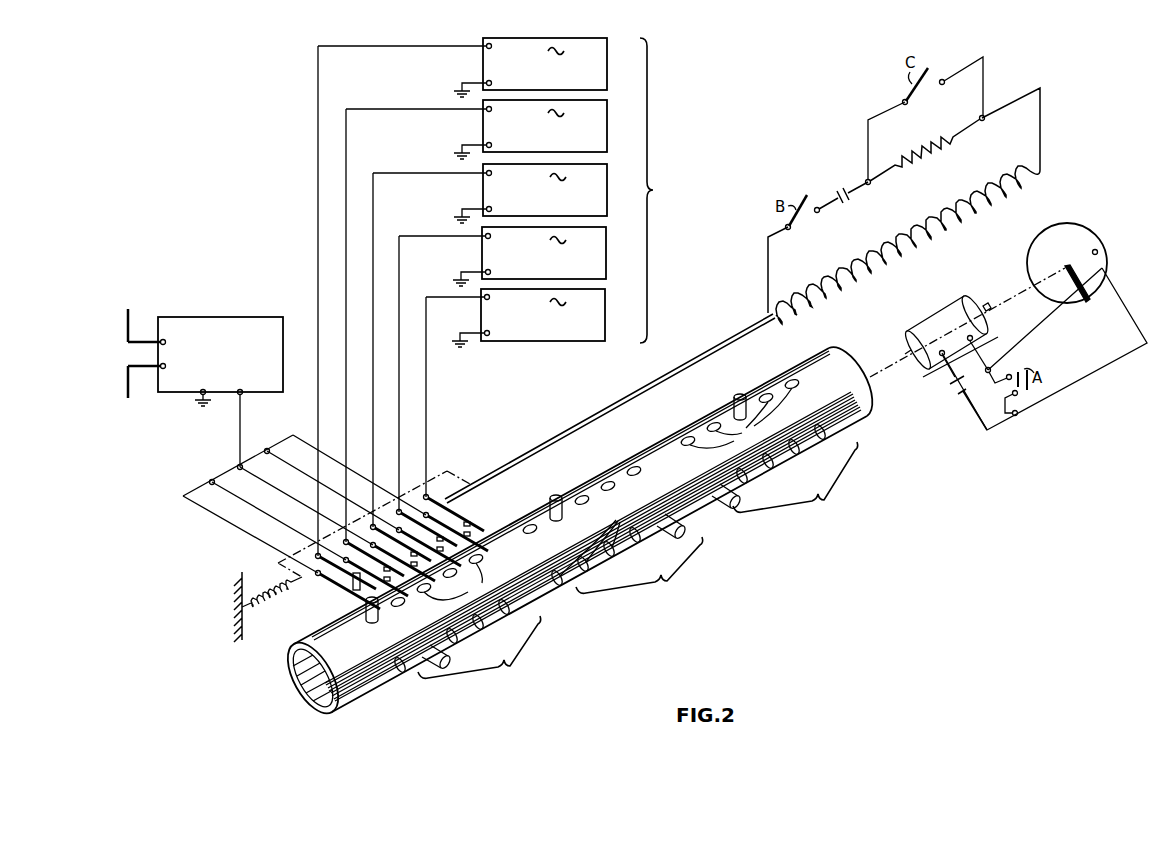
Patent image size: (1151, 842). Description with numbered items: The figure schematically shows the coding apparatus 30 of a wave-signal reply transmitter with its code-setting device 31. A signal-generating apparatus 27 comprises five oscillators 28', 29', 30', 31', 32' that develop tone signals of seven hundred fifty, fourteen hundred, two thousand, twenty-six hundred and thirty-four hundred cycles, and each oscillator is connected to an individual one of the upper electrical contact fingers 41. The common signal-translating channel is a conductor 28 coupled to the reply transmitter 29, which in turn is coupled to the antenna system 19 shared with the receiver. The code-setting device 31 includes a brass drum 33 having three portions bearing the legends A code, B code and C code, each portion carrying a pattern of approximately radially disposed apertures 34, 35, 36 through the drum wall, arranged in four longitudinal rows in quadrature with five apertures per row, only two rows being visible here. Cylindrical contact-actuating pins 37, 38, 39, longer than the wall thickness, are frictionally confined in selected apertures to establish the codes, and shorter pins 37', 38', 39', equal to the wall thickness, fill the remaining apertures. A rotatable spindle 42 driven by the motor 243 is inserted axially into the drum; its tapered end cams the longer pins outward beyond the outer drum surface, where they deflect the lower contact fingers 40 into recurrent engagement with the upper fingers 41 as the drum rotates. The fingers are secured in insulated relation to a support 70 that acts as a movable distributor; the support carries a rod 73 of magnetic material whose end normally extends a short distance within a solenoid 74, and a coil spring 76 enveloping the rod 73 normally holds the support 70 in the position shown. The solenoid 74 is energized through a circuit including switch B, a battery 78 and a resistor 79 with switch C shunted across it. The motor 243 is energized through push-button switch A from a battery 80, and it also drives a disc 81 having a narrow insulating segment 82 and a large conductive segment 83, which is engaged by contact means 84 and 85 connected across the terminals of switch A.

The antenna system 19 is at (123, 376).
The signal-generating apparatus 27 is at (680, 201).
The conductor 28 is at (304, 484).
The oscillator 28' is at (477, 297).
The reply transmitter 29 is at (220, 349).
The oscillator 29' is at (491, 321).
The coding apparatus 30 is at (702, 318).
The oscillator 30' is at (505, 345).
The code-setting device 31 is at (574, 534).
The oscillator 31' is at (518, 369).
The oscillator 32' is at (531, 393).
The drum 33 is at (644, 449).
The apertures 34 is at (461, 581).
The apertures 35 is at (594, 539).
The apertures 36 is at (741, 418).
The pin 37 is at (360, 624).
The pin 37' is at (416, 680).
The pin 38 is at (609, 503).
The pin 38' is at (556, 597).
The pin 39 is at (719, 442).
The pin 39' is at (814, 384).
The lower electrical contact fingers 40 is at (359, 597).
The upper electrical contact fingers 41 is at (350, 583).
The spindle 42 is at (888, 366).
The support 70 is at (285, 569).
The rod 73 is at (535, 446).
The solenoid 74 is at (915, 231).
The coil spring 76 is at (284, 606).
The battery 78 is at (840, 191).
The resistor 79 is at (923, 152).
The battery 80 is at (949, 391).
The disc 81 is at (1022, 258).
The insulating segment 82 is at (1067, 295).
The conductive segment 83 is at (1080, 234).
The contact means 84 is at (1096, 301).
The contact means 85 is at (1099, 253).
The motor 243 is at (915, 328).